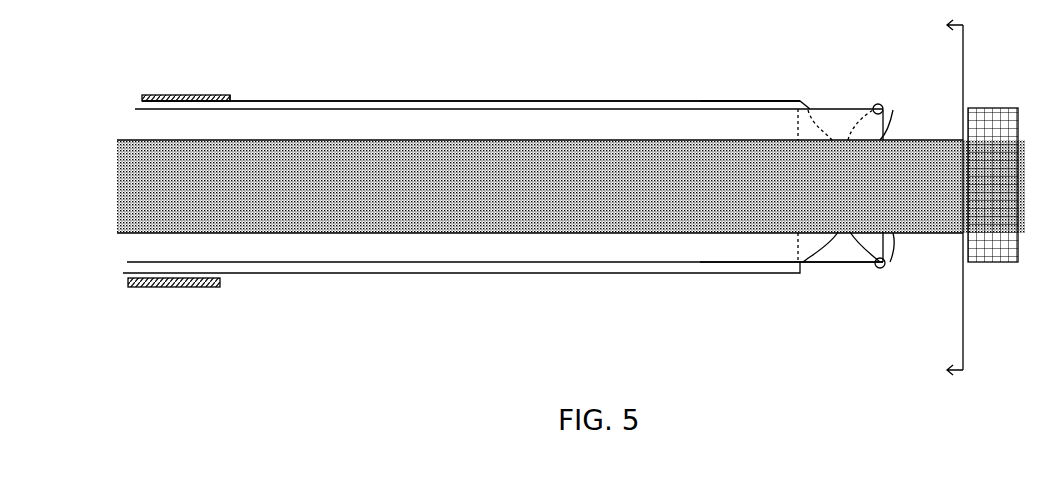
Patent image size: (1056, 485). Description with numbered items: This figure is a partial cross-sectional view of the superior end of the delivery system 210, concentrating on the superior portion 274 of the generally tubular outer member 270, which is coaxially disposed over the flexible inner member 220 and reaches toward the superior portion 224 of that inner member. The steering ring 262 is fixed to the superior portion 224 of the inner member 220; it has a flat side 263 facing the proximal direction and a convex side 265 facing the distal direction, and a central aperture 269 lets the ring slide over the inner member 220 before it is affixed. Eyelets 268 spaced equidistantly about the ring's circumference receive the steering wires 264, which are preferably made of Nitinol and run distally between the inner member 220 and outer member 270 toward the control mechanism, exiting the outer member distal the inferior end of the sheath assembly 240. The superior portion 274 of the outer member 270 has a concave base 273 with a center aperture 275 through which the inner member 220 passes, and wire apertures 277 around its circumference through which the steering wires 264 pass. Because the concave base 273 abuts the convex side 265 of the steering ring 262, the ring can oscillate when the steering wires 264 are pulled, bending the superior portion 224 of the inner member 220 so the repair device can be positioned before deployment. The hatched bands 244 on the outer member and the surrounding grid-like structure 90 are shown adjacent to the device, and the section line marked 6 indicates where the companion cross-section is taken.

The delivery system 210 is at (571, 194).
The inner member 220 is at (380, 150).
The superior portion of the inner member 224 is at (698, 236).
The sheath assembly 240 is at (162, 95).
The marker band edge 244 is at (232, 100).
The steering ring 262 is at (847, 272).
The flat side 263 is at (893, 112).
The steering wires 264 is at (508, 108).
The convex side 265 is at (848, 108).
The eyelets 268 is at (883, 104).
The aperture 269 is at (893, 236).
The outer member 270 is at (315, 100).
The concave base 273 is at (810, 128).
The superior portion of the outer member 274 is at (717, 100).
The center aperture 275 is at (783, 232).
The wire apertures 277 is at (810, 101).
The tissue 90 is at (1003, 268).
The section line 6- 6 is at (939, 197).